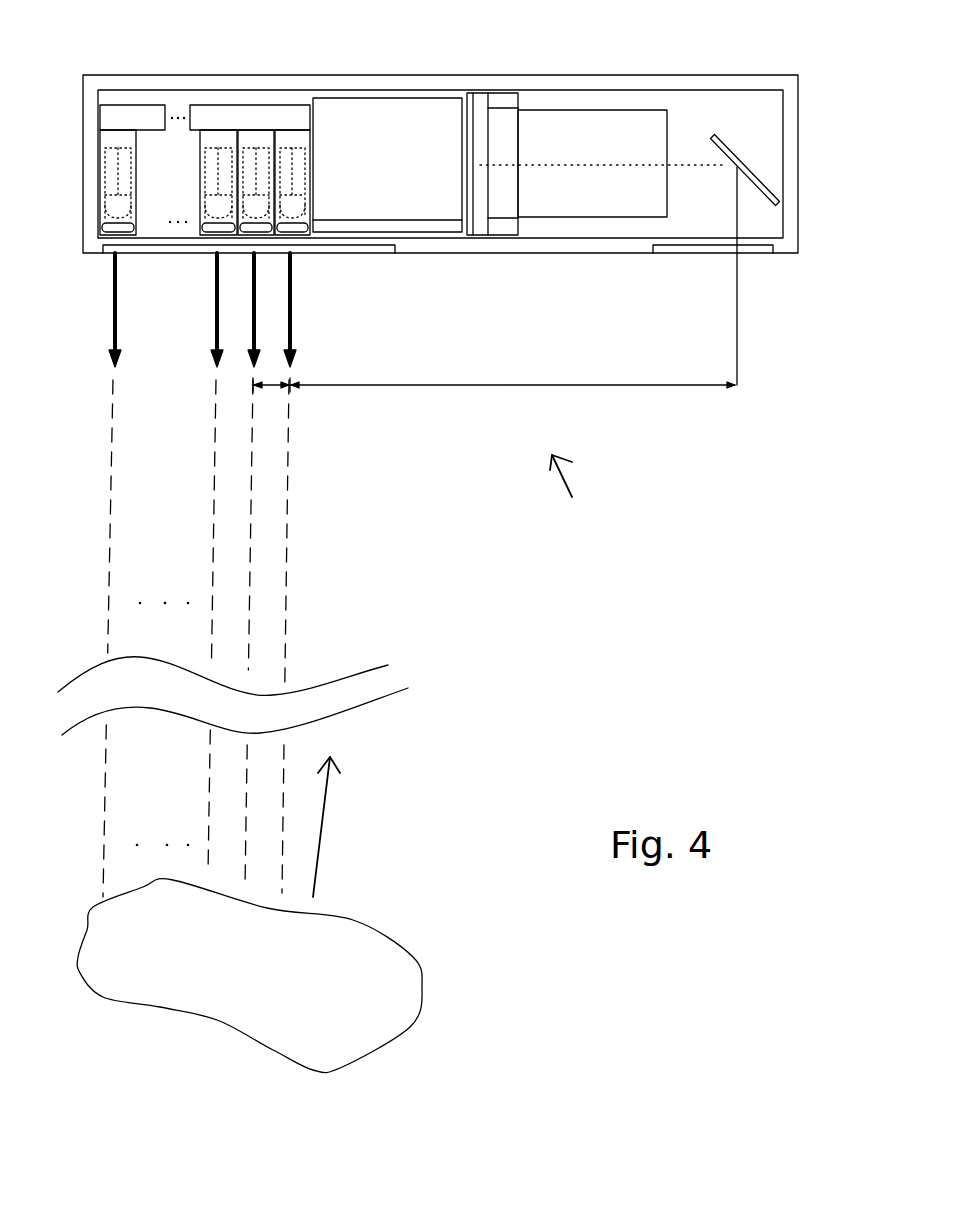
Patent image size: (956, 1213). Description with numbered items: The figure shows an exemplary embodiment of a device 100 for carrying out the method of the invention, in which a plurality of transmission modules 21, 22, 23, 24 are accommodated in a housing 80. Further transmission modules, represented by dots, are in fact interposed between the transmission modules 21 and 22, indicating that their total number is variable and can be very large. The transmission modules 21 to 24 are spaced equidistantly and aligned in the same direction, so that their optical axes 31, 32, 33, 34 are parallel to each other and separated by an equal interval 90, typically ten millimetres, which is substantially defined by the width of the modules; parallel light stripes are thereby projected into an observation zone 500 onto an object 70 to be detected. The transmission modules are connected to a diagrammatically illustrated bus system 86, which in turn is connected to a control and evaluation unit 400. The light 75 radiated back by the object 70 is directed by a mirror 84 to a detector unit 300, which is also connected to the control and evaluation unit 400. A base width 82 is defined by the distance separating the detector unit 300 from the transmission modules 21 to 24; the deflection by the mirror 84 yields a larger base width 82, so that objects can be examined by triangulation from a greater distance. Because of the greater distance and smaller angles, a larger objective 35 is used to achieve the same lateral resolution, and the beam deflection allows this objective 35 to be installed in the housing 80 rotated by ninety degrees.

The transmission module 21 is at (112, 162).
The transmission module 22 is at (215, 163).
The transmission module 23 is at (250, 180).
The transmission module 24 is at (300, 163).
The optical axis 31 is at (113, 275).
The optical axis 32 is at (215, 312).
The optical axis 33 is at (256, 335).
The optical axis 34 is at (292, 287).
The objective 35 is at (643, 120).
The object 70 is at (270, 978).
The light radiated back 75 is at (322, 838).
The housing 80 is at (603, 82).
The base width 82 is at (585, 383).
The mirror 84 is at (722, 148).
The bus system 86 is at (135, 110).
The interval 90 is at (273, 386).
The device 100 is at (575, 500).
The detector unit 300 is at (505, 218).
The control and evaluation unit 400 is at (455, 212).
The observation zone 500 is at (252, 790).